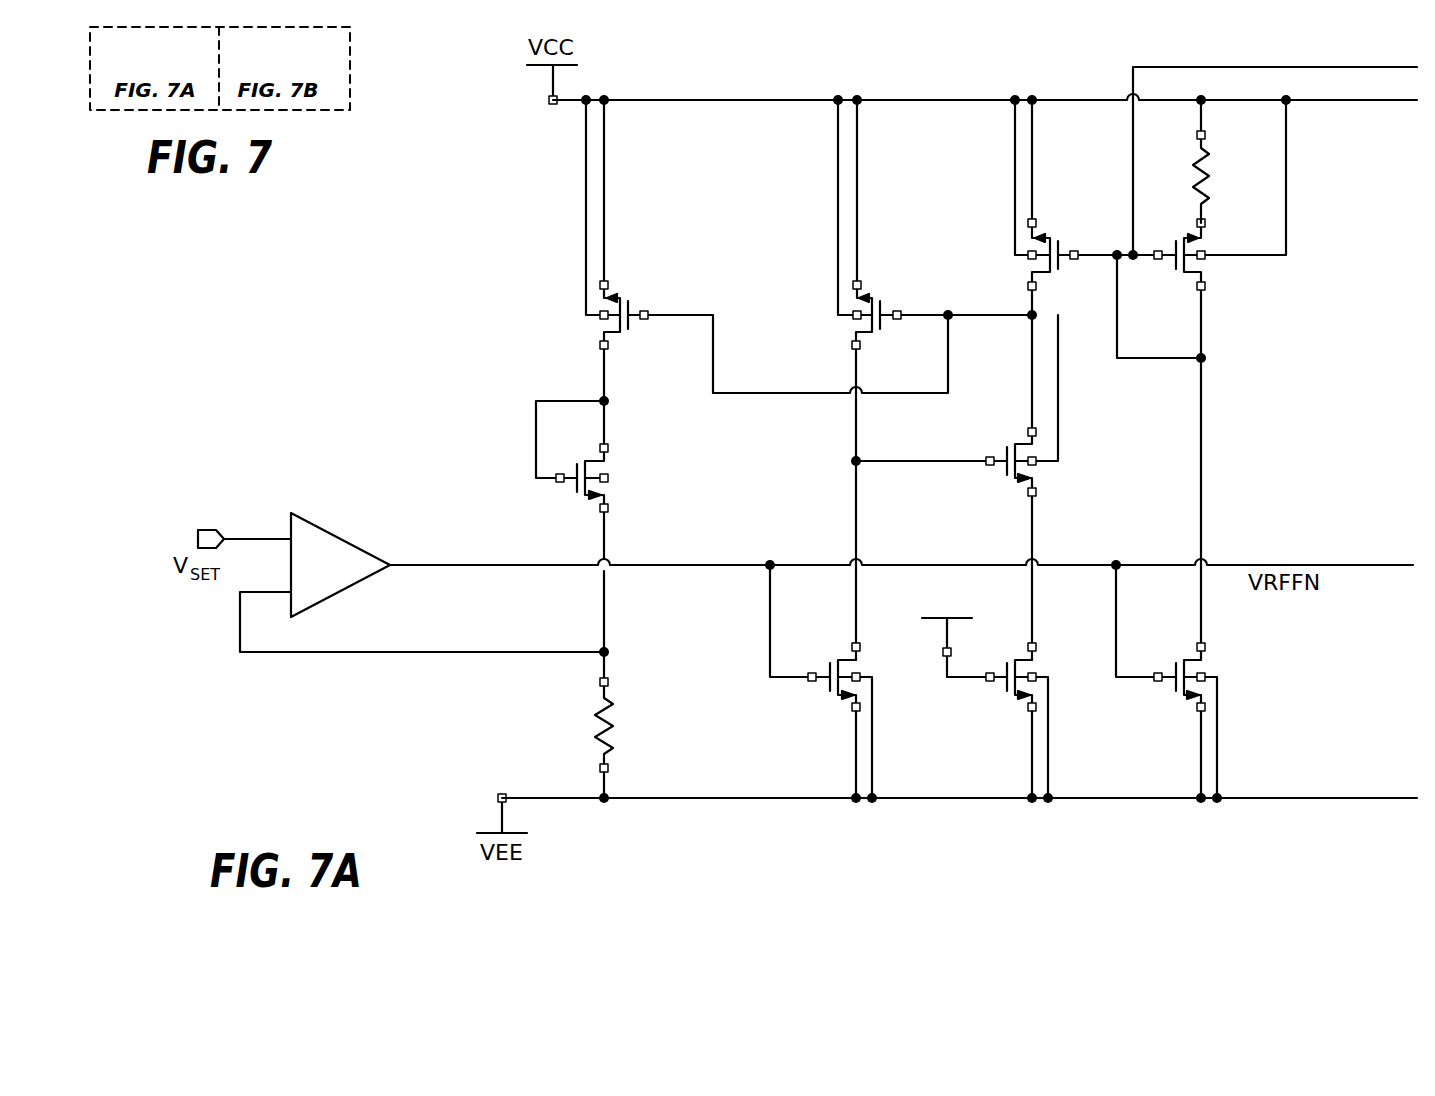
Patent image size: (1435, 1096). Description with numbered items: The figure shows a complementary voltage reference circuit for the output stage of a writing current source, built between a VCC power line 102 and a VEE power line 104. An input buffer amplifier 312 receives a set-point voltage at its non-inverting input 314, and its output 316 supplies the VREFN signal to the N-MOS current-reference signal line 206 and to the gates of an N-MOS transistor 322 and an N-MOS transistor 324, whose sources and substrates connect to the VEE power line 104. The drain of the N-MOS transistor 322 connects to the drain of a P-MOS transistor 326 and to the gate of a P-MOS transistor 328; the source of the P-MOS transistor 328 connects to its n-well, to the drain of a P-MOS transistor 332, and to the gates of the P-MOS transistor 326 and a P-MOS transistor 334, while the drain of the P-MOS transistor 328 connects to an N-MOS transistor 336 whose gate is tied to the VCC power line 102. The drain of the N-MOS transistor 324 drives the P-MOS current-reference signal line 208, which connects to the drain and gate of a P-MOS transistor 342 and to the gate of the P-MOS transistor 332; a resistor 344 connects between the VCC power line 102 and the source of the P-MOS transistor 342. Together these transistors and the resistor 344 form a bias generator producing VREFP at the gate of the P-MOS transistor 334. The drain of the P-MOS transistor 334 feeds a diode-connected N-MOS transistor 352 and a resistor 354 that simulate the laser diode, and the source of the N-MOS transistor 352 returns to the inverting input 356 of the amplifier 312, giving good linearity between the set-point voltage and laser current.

The VCC power line 102 is at (699, 99).
The VEE power line 104 is at (766, 800).
The N-MOS current-reference signal line 206 is at (1331, 563).
The P-MOS current-reference signal line 208 is at (1219, 66).
The input buffer amplifier 312 is at (337, 540).
The non-inverting input 314 is at (291, 537).
The output 316 is at (394, 563).
The N-MOS transistor 322 is at (843, 697).
The N-MOS transistor 324 is at (1188, 697).
The P-MOS transistor 326 is at (866, 298).
The P-MOS transistor 328 is at (1020, 483).
The P-MOS transistor 332 is at (1038, 240).
The P-MOS transistor 334 is at (612, 298).
The N-MOS transistor 336 is at (1020, 697).
The P-MOS transistor 342 is at (1193, 282).
The resistor 344 is at (1208, 183).
The N-MOS transistor 352 is at (595, 497).
The resistor 354 is at (598, 713).
The inverting input 356 is at (291, 596).